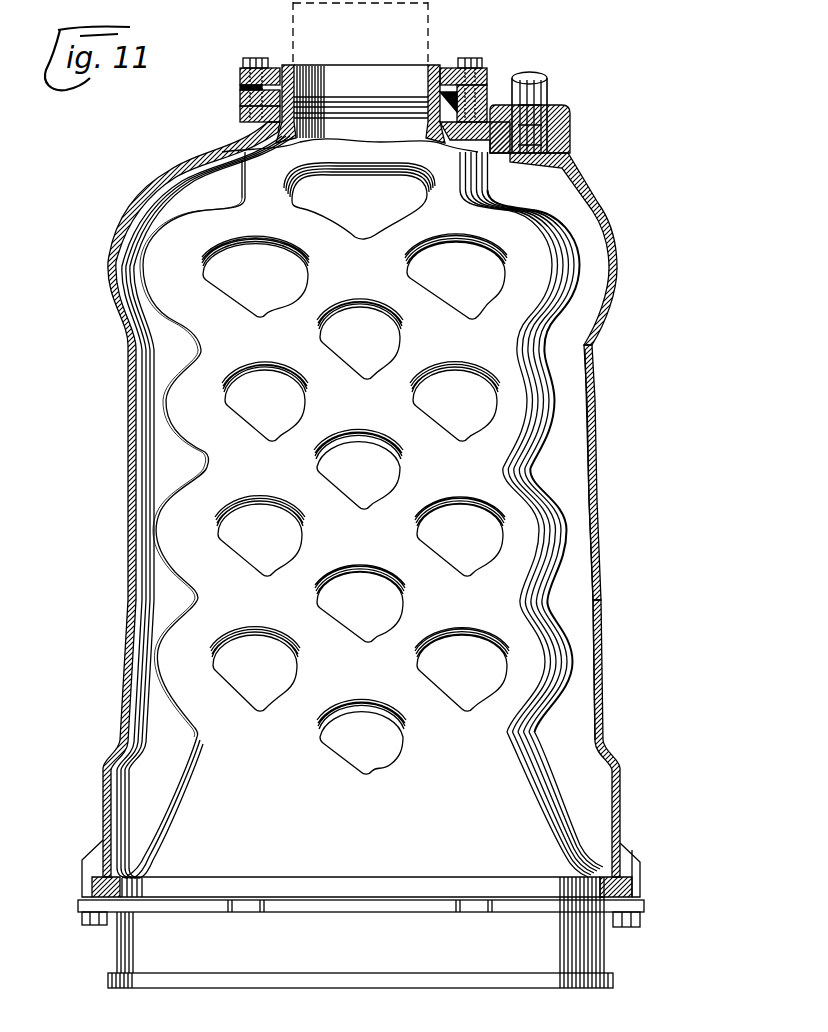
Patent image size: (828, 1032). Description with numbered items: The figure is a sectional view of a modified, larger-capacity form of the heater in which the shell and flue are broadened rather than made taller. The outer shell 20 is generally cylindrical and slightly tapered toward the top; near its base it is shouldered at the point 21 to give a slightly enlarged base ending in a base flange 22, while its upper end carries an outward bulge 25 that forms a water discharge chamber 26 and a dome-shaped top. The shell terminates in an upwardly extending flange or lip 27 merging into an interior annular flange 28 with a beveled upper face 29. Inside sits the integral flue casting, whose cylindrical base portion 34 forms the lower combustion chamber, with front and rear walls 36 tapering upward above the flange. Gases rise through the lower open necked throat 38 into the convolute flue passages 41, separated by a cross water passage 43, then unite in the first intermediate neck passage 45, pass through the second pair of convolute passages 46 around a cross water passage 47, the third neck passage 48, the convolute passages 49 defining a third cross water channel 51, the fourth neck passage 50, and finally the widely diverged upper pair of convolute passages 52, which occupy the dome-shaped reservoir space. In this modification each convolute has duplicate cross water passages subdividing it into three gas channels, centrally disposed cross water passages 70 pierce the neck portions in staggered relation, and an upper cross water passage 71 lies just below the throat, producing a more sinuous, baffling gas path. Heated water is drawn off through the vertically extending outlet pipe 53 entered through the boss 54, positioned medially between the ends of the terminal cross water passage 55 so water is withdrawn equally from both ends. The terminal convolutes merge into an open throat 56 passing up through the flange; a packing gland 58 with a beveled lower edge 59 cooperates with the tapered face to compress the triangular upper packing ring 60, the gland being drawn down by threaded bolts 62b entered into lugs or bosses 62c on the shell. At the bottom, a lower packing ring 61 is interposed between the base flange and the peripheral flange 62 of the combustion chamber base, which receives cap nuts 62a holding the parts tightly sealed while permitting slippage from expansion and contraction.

The outer shell 20 is at (603, 524).
The shoulder 21 is at (620, 760).
The base flange 22 is at (625, 892).
The outward bulge 25 is at (614, 262).
The water discharge chamber 26 is at (602, 230).
The upwardly extending flange or lip 27 is at (243, 103).
The interior annular flange 28 is at (243, 120).
The beveled upper face 29 is at (241, 162).
The base portion 34 is at (360, 950).
The front and rear walls 36 is at (361, 852).
The lower open necked throat 38 is at (238, 740).
The convolute flue passages 41 is at (365, 738).
The cross water passage 43 is at (264, 692).
The first intermediate neck passage 45 is at (308, 603).
The second pair of convolute passages 46 is at (360, 533).
The cross water passage 47 is at (268, 556).
The third neck passage 48 is at (323, 469).
The convolute passages 49 is at (359, 407).
The fourth neck passage 50 is at (327, 339).
The third cross water channel 51 is at (274, 414).
The upper pair of convolute passages 52 is at (360, 270).
The outlet pipe 53 is at (548, 86).
The boss 54 is at (572, 125).
The terminal cross water passage 55 is at (250, 290).
The open throat 56 is at (360, 72).
The packing gland 58 is at (257, 58).
The beveled lower edge 59 is at (282, 67).
The upper packing ring 60 is at (296, 98).
The lower packing ring 61 is at (130, 895).
The peripheral flange 62 is at (361, 897).
The cap nuts 62a is at (642, 920).
The threaded bolts 62b is at (243, 62).
The lugs or bosses 62c is at (241, 87).
The centrally disposed cross water passages 70 is at (362, 752).
The upper cross water passage 71 is at (362, 225).